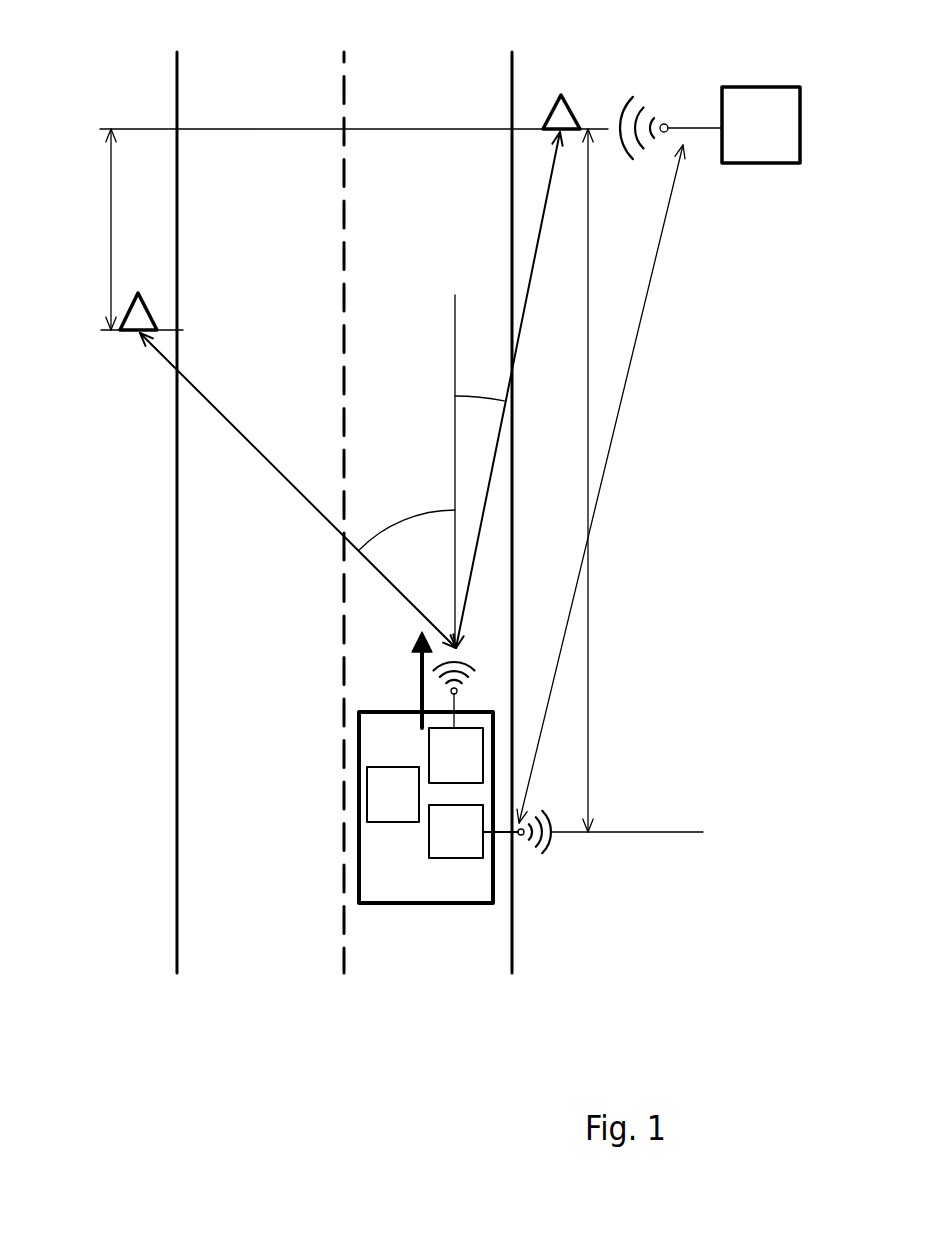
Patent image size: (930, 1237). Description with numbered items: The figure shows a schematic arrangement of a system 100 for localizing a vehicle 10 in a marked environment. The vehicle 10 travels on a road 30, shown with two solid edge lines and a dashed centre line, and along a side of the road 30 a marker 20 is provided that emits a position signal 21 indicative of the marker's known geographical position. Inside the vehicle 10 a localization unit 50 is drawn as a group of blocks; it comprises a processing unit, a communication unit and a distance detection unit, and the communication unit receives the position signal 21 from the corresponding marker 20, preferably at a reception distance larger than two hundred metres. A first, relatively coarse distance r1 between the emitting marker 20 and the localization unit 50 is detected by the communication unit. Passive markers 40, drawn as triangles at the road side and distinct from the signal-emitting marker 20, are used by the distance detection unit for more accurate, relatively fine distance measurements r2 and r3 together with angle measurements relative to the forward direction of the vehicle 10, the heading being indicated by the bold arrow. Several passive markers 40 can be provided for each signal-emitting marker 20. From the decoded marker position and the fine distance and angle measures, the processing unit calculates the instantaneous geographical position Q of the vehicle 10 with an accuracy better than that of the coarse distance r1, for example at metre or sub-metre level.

The vehicle 10 is at (426, 834).
The marker 20 is at (757, 163).
The position signal 21 is at (672, 89).
The road 30 is at (215, 862).
The passive marker 40 is at (569, 110).
The localization unit 50 is at (398, 893).
The system 100 is at (667, 948).
The instantaneous geographical position Q is at (500, 672).
The first distance r1 is at (601, 484).
The second distance measure r2 is at (507, 390).
The second distance measure r3 is at (298, 490).